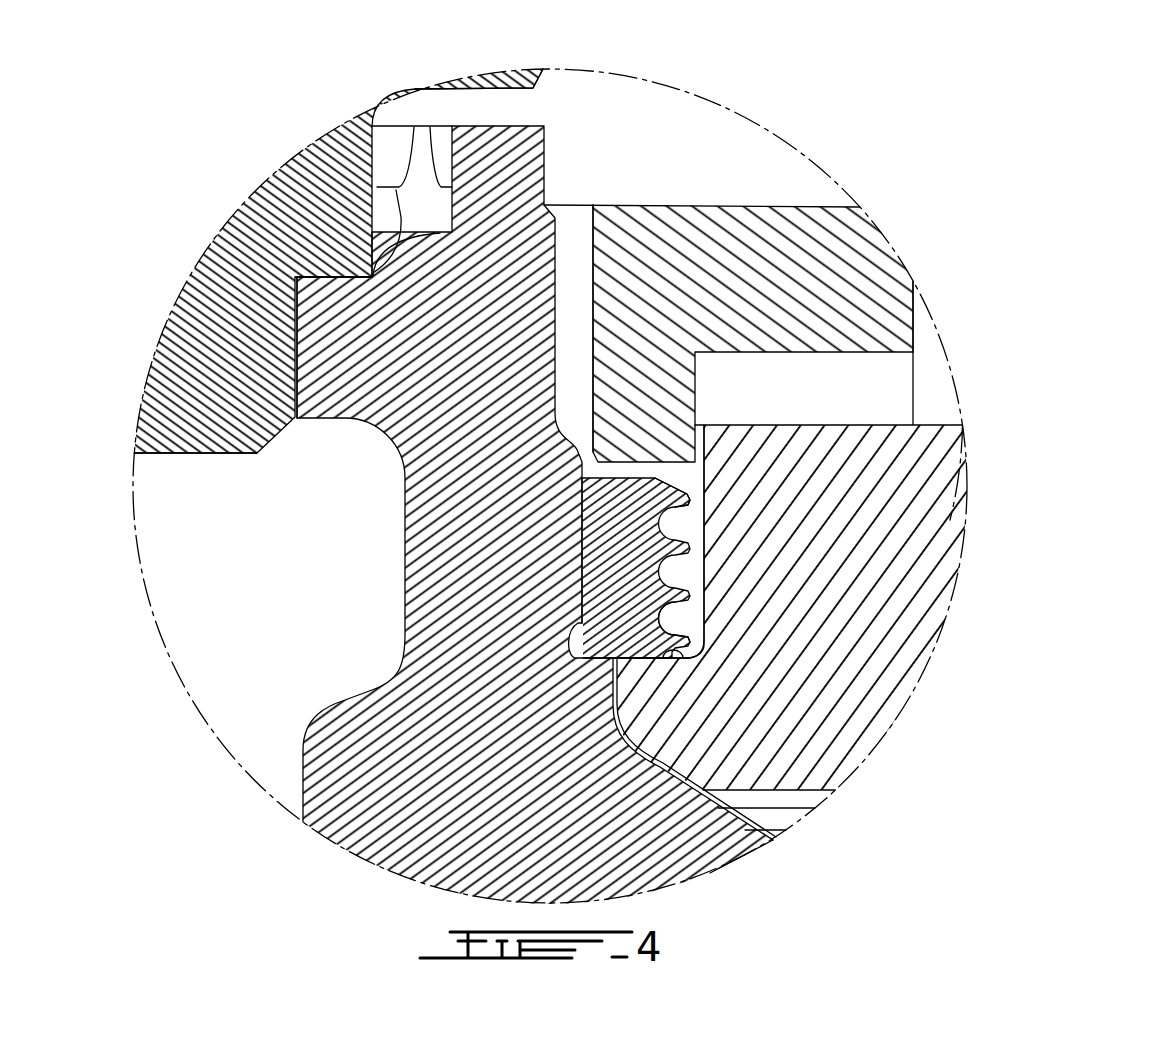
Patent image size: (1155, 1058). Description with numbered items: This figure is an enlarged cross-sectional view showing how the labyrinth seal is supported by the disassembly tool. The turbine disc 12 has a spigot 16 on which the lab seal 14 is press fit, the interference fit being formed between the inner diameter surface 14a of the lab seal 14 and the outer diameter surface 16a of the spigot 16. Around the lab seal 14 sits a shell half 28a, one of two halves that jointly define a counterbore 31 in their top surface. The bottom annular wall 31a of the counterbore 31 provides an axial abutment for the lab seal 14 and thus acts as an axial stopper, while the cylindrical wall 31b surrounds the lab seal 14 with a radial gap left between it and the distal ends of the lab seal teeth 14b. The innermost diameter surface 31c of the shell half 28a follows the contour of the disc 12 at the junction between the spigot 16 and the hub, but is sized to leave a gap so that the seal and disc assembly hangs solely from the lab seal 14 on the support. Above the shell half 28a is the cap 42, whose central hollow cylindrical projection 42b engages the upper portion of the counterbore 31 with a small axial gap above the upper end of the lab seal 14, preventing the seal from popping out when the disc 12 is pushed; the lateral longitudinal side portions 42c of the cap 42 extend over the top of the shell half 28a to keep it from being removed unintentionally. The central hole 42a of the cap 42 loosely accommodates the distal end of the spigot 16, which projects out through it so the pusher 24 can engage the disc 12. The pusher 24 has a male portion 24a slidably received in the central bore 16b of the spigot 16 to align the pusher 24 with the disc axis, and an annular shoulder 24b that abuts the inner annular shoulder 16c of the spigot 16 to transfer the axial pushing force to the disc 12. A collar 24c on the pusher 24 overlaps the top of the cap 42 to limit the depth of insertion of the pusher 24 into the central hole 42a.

The turbine disc 12 is at (710, 871).
The labyrinth seal 14 is at (690, 615).
The inner diameter surface of the lab seal 14a is at (579, 580).
The lab seal teeth 14b is at (675, 498).
The spigot 16 is at (530, 150).
The outer diameter surface of the spigot 16a is at (588, 530).
The central bore of the spigot 16b is at (297, 378).
The inner annular shoulder of the disc spigot 16c is at (396, 190).
The pusher 24 is at (263, 203).
The male portion of the pusher 24a is at (176, 427).
The annular shoulder of the pusher 24b is at (324, 272).
The collar 24c is at (523, 74).
The shell half 28a is at (940, 468).
The counterbore 31 is at (737, 443).
The bottom annular wall of the counterbore 31a is at (690, 653).
The cylindrical wall of the counterbore 31b is at (705, 540).
The innermost diameter surface of the shell halves 31c is at (612, 740).
The cap 42 is at (805, 228).
The central hole of the cap 42a is at (575, 230).
The central hollow cylindrical projection of the cap 42b is at (697, 382).
The cap lateral longitudinal side portions 42c is at (860, 262).